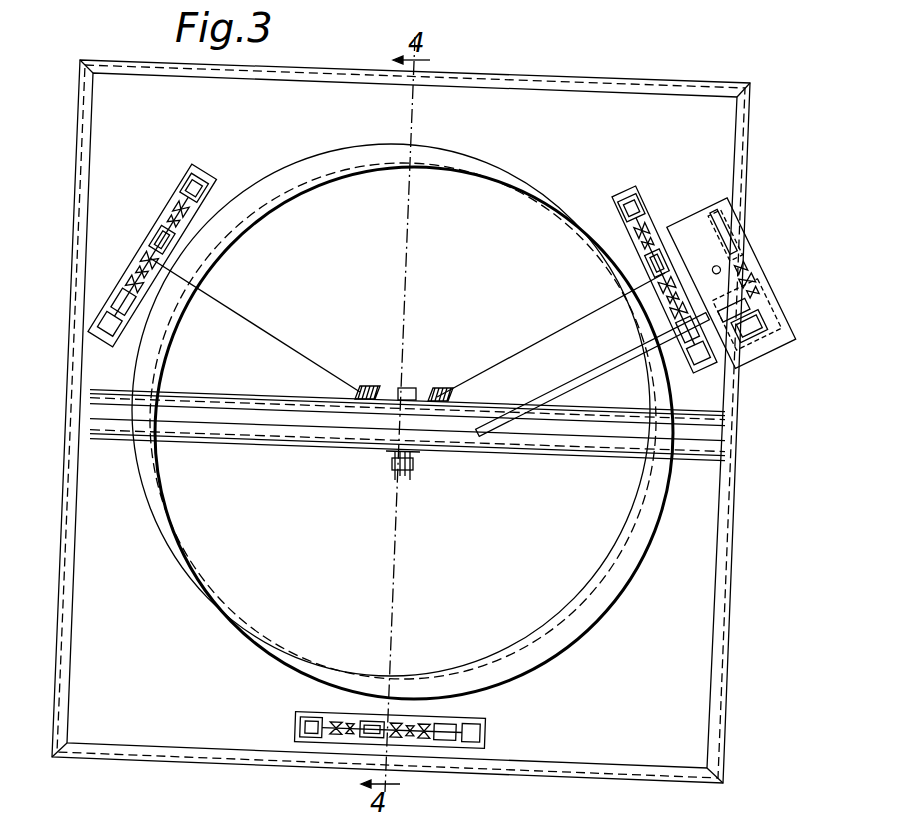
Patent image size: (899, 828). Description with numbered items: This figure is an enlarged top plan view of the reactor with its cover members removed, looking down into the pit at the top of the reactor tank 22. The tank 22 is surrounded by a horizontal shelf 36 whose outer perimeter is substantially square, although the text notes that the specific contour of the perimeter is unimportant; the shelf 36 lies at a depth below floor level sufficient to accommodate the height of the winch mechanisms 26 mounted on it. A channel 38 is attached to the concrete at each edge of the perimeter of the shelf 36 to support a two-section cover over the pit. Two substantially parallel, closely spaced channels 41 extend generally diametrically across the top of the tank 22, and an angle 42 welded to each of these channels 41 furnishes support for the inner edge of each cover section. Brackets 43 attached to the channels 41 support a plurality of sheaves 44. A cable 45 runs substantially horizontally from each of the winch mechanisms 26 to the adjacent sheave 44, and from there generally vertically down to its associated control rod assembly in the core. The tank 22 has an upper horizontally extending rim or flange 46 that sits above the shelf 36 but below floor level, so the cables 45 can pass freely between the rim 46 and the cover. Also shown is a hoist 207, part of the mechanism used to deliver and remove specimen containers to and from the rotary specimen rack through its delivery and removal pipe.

The reactor tank 22 is at (205, 582).
The winch mechanism 26 is at (180, 193).
The horizontal shelf 36 is at (293, 110).
The channel 38 is at (578, 81).
The channel 41 is at (249, 402).
The angle 42 is at (312, 399).
The bracket 43 is at (426, 393).
The sheave 44 is at (362, 384).
The cable 45 is at (302, 352).
The rim or flange 46 is at (168, 545).
The hoist 207 is at (803, 250).